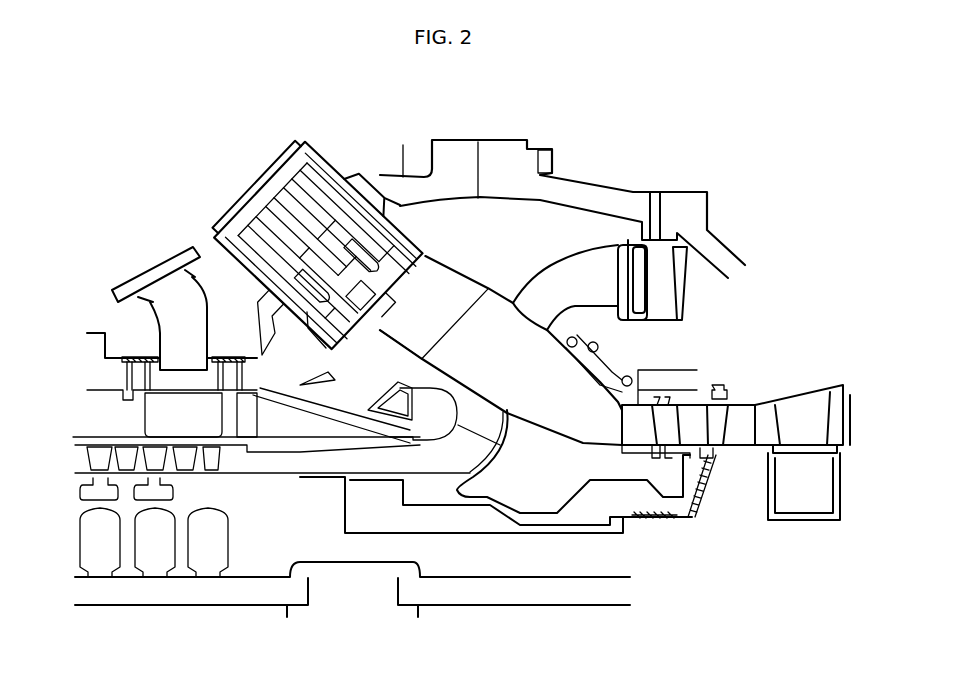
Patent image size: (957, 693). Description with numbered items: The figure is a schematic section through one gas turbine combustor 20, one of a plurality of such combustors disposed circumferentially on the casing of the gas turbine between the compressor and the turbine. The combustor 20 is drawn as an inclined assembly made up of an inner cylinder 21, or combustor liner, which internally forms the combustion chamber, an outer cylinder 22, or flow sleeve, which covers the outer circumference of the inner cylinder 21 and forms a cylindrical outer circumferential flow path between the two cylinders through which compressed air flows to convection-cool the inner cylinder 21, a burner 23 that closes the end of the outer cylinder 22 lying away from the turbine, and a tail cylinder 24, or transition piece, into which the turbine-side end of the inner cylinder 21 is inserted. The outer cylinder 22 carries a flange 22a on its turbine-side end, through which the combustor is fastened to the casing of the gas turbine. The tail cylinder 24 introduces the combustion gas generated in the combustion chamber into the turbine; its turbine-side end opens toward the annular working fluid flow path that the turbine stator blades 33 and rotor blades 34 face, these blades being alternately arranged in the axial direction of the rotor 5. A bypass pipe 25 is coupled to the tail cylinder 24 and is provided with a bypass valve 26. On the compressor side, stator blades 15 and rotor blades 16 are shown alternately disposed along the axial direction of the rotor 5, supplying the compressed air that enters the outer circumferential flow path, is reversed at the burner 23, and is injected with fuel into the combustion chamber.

The gas turbine combustor 20 is at (310, 122).
The inner cylinder 21 is at (410, 238).
The outer cylinder 22 is at (366, 172).
The flange 22a is at (453, 145).
The burner 23 is at (204, 206).
The tail cylinder 24 is at (548, 432).
The bypass pipe 25 is at (557, 266).
The bypass valve 26 is at (647, 302).
The stator blades 33 is at (803, 393).
The rotor blades 34 is at (742, 400).
The rotor blades 16 is at (127, 440).
The stator blades 15 is at (95, 437).
The rotor 5 is at (280, 475).